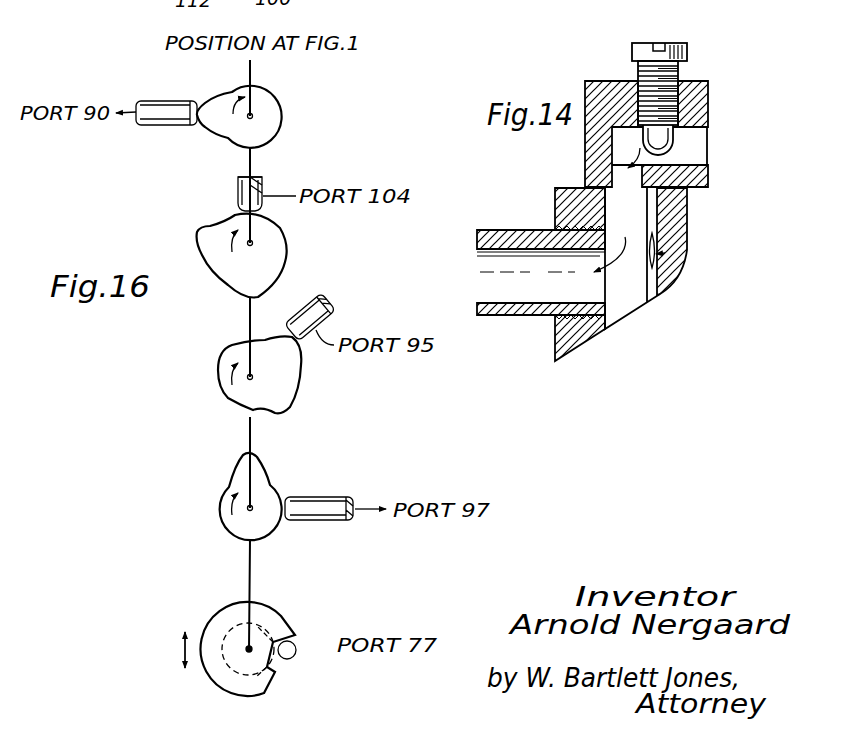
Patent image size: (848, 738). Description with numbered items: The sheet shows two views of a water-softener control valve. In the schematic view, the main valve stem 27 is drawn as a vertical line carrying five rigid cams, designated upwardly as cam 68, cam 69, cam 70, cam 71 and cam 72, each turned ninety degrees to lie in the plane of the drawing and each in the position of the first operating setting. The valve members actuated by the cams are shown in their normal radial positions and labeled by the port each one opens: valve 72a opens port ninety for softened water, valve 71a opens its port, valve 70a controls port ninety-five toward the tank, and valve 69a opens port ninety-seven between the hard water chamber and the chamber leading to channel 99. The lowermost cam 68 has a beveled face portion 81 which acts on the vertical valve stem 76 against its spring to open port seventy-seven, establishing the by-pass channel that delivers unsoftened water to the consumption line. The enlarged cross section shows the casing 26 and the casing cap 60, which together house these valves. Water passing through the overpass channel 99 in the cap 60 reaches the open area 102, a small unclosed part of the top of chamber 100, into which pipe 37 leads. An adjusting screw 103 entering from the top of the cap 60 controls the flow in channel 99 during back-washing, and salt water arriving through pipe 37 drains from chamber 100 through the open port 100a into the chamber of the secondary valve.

In FIG. 16, the main valve stem 27 is at (250, 70).
In FIG. 16, the cam 72 is at (226, 140).
In FIG. 16, the valve 72a is at (163, 108).
In FIG. 16, the valve 71a is at (258, 186).
In FIG. 16, the cam 71 is at (220, 280).
In FIG. 16, the cam 70 is at (232, 400).
In FIG. 16, the valve 70a is at (330, 316).
In FIG. 16, the cam 69 is at (226, 518).
In FIG. 16, the valve 69a is at (340, 498).
In FIG. 16, the cam 68 is at (222, 615).
In FIG. 16, the beveled face portion 81 is at (282, 613).
In FIG. 16, the valve stem 76 is at (293, 642).
In FIG. 14, the adjusting screw 103 is at (677, 43).
In FIG. 14, the casing cap 60 is at (708, 80).
In FIG. 14, the open area 102 is at (620, 147).
In FIG. 14, the channel 99 is at (694, 147).
In FIG. 14, the casing 26 is at (553, 204).
In FIG. 14, the port 100a is at (665, 253).
In FIG. 14, the chamber 100 is at (633, 305).
In FIG. 14, the pipe 37 is at (522, 317).